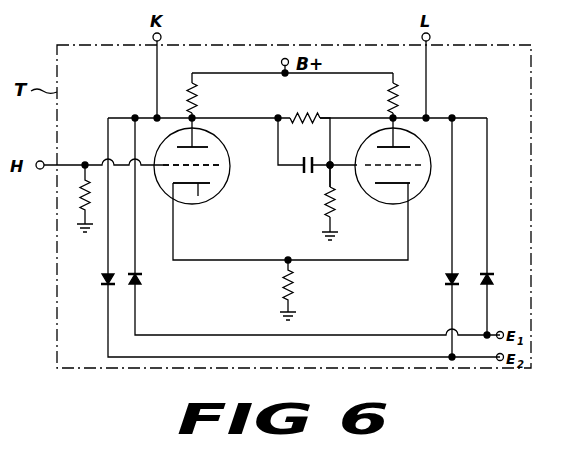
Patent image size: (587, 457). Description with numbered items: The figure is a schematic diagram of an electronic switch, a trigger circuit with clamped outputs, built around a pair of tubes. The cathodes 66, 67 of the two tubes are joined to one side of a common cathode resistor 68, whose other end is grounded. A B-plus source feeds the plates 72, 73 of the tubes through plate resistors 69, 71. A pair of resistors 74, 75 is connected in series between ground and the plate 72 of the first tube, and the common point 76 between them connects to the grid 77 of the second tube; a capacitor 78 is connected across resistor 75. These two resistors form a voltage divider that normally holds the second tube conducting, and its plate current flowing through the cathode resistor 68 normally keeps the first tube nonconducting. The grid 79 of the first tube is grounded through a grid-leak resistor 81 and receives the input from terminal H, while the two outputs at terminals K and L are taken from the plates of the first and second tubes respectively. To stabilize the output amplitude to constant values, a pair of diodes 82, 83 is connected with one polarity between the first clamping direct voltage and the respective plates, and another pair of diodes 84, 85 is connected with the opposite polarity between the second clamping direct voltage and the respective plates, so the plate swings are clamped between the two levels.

The cathode 66 is at (196, 185).
The cathode 67 is at (392, 185).
The cathode resistor 68 is at (295, 288).
The plate resistor 69 is at (211, 94).
The plate resistor 71 is at (387, 96).
The plate 72 is at (202, 145).
The plate 73 is at (385, 145).
The resistor 74 is at (327, 204).
The resistor 75 is at (319, 111).
The common point 76 is at (330, 168).
The grid 77 is at (336, 182).
The capacitor 78 is at (314, 157).
The grid 79 is at (164, 190).
The grid-leak resistor 81 is at (85, 186).
The diode 82 is at (140, 276).
The diode 83 is at (490, 276).
The diode 84 is at (102, 288).
The diode 85 is at (445, 279).